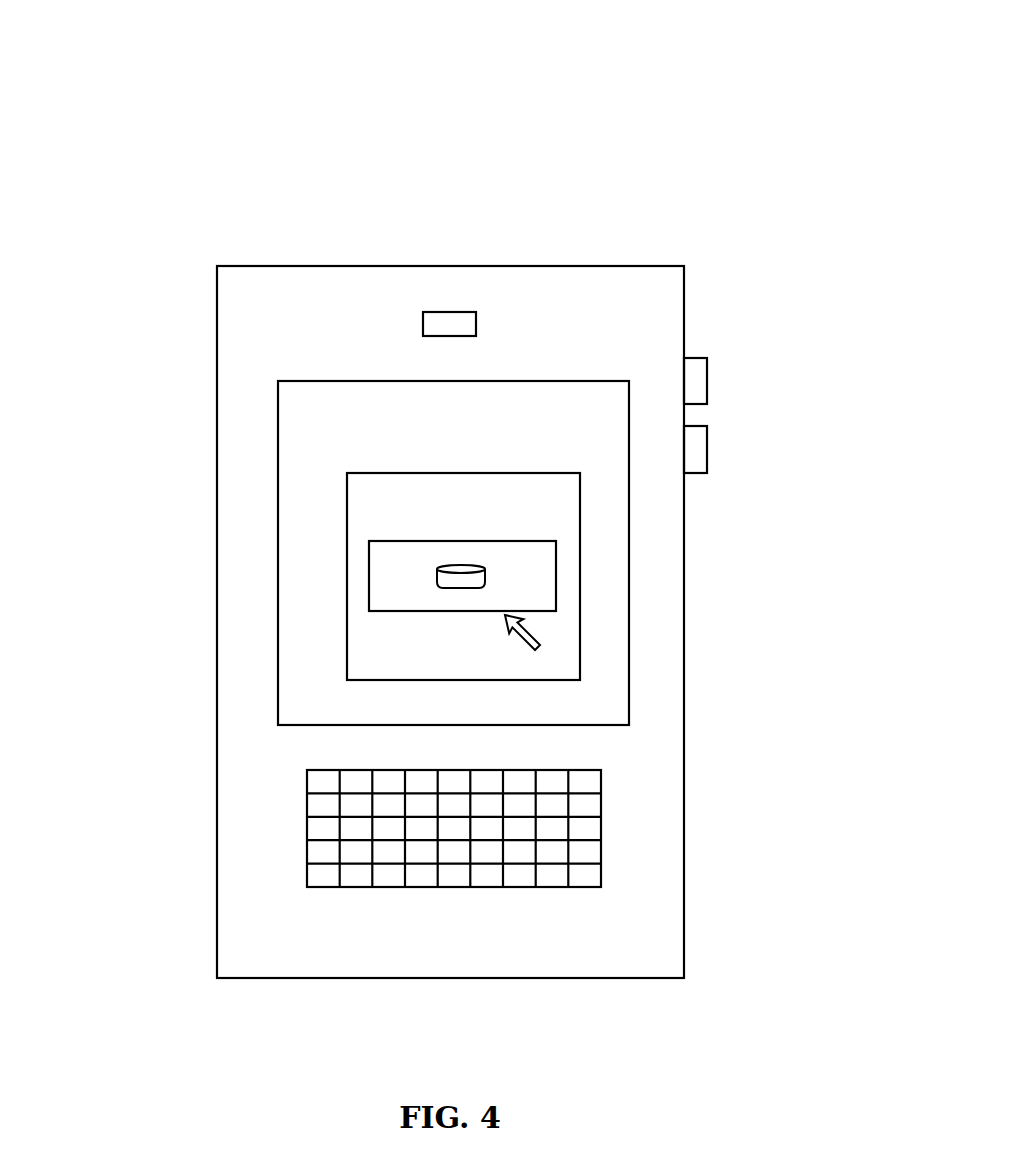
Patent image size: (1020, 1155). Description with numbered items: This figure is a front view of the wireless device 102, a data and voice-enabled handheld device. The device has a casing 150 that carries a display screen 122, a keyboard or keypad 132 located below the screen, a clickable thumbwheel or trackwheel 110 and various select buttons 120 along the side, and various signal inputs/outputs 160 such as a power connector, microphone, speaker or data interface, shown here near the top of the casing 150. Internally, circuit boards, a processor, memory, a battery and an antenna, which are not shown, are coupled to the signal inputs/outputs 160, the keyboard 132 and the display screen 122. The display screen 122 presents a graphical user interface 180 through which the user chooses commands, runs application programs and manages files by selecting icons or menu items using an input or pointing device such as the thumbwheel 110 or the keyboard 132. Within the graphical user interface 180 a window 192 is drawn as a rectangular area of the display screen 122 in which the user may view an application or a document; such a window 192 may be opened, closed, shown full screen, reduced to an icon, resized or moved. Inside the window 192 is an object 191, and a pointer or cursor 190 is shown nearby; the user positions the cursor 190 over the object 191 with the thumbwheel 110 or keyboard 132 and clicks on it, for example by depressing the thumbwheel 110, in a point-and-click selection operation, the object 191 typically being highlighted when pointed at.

The wireless device 102 is at (437, 243).
The casing 150 is at (278, 290).
The signal inputs/outputs 160 is at (447, 312).
The clickable thumbwheel 110 is at (700, 380).
The select buttons 120 is at (700, 449).
The display screen 122 is at (317, 427).
The graphical user interface 180 is at (358, 542).
The window 192 is at (537, 565).
The object 191 is at (433, 586).
The pointer or cursor 190 is at (553, 633).
The keyboard 132 is at (577, 817).